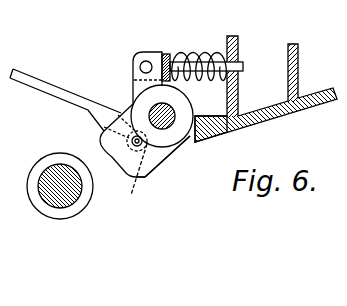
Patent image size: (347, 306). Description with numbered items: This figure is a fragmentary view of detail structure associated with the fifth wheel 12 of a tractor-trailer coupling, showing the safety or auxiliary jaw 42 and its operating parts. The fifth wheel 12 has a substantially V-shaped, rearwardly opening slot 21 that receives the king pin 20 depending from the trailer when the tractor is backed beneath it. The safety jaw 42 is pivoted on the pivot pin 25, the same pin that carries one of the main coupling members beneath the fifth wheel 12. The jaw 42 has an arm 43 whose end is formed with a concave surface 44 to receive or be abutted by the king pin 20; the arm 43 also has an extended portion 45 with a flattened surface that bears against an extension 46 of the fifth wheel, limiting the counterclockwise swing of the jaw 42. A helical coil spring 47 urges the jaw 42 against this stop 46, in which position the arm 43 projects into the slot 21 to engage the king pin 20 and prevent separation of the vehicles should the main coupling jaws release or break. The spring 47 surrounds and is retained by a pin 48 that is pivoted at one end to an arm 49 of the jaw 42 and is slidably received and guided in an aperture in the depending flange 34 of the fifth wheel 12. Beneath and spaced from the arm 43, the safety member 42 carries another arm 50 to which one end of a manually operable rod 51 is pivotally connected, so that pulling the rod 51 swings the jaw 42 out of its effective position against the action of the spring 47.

The fifth wheel 12 is at (313, 92).
The king pin 20 is at (80, 208).
The slot 21 is at (273, 118).
The pivot pin 25 is at (153, 112).
The depending flange 34 is at (236, 42).
The safety jaw 42 is at (170, 166).
The arm 43 is at (149, 172).
The concave surface 44 is at (121, 163).
The extended portion 45 is at (189, 142).
The extension 46 is at (205, 142).
The helical coil spring 47 is at (208, 54).
The pin 48 is at (243, 67).
The arm 49 is at (133, 79).
The arm 50 is at (136, 177).
The manually operable rod 51 is at (54, 99).